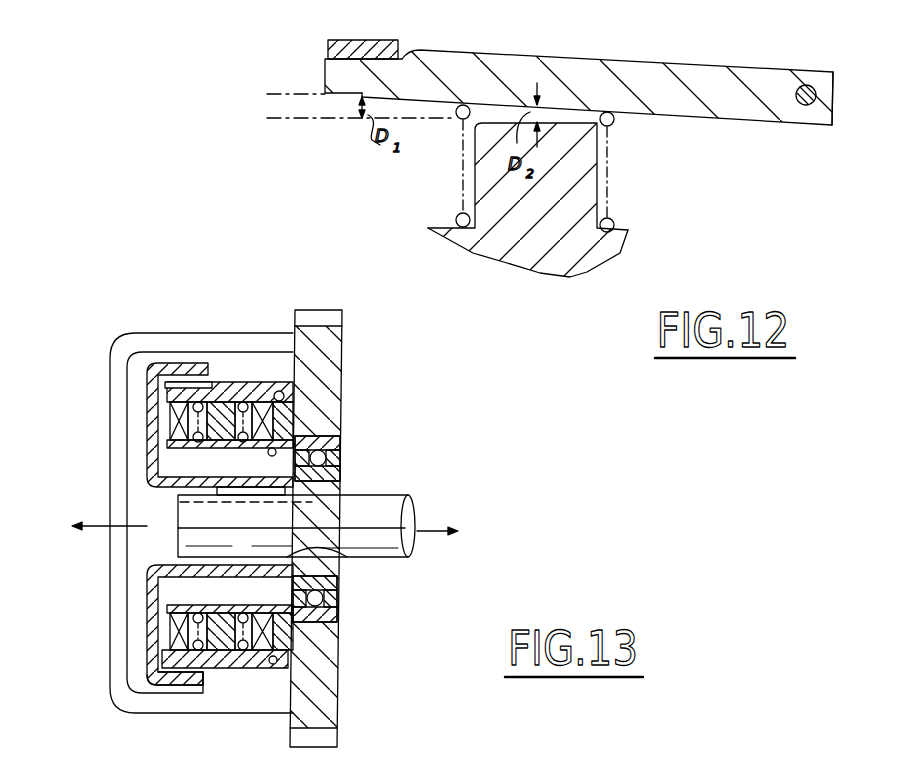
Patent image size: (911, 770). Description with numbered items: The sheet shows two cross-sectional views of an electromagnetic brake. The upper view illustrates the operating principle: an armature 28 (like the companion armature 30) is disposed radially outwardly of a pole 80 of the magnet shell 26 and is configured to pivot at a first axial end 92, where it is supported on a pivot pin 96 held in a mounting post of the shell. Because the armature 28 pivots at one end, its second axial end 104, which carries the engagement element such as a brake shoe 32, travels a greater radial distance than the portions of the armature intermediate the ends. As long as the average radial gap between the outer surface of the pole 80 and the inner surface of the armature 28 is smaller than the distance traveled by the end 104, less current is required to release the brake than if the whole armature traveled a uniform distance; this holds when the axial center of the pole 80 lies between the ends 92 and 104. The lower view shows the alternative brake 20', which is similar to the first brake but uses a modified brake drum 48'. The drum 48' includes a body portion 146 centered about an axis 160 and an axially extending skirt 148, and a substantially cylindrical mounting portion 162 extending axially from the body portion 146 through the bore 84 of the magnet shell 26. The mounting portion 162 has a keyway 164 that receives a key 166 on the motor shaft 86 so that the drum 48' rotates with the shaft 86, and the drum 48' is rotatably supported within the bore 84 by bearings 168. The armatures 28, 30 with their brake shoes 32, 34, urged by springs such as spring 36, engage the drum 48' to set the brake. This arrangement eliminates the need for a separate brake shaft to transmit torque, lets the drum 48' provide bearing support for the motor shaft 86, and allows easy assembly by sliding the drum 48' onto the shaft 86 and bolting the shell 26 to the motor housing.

In FIG. 13, the brake 20' is at (173, 486).
In FIG. 12, the magnet shell 26 is at (628, 247).
In FIG. 13, the magnet shell 26 is at (333, 360).
In FIG. 12, the armature 28 is at (628, 72).
In FIG. 13, the armature 28 is at (230, 387).
In FIG. 13, the armature 30 is at (240, 663).
In FIG. 12, the brake shoe 32 is at (372, 42).
In FIG. 13, the brake shoe 32 is at (195, 383).
In FIG. 13, the brake shoe 34 is at (205, 667).
In FIG. 12, the spring 36 is at (610, 208).
In FIG. 13, the brake drum 48' is at (174, 425).
In FIG. 12, the pole 80 is at (587, 183).
In FIG. 13, the bore 84 is at (285, 437).
In FIG. 13, the motor shaft 86 is at (405, 553).
In FIG. 12, the first axial end 92 is at (803, 77).
In FIG. 12, the pivot pin 96 is at (817, 97).
In FIG. 12, the second axial end 104 is at (333, 72).
In FIG. 13, the body portion 146 is at (147, 658).
In FIG. 13, the skirt 148 is at (172, 683).
In FIG. 13, the axis 160 is at (427, 528).
In FIG. 13, the mounting portion 162 is at (345, 557).
In FIG. 13, the keyway 164 is at (305, 502).
In FIG. 13, the key 166 is at (252, 502).
In FIG. 13, the bearings 168 is at (338, 620).